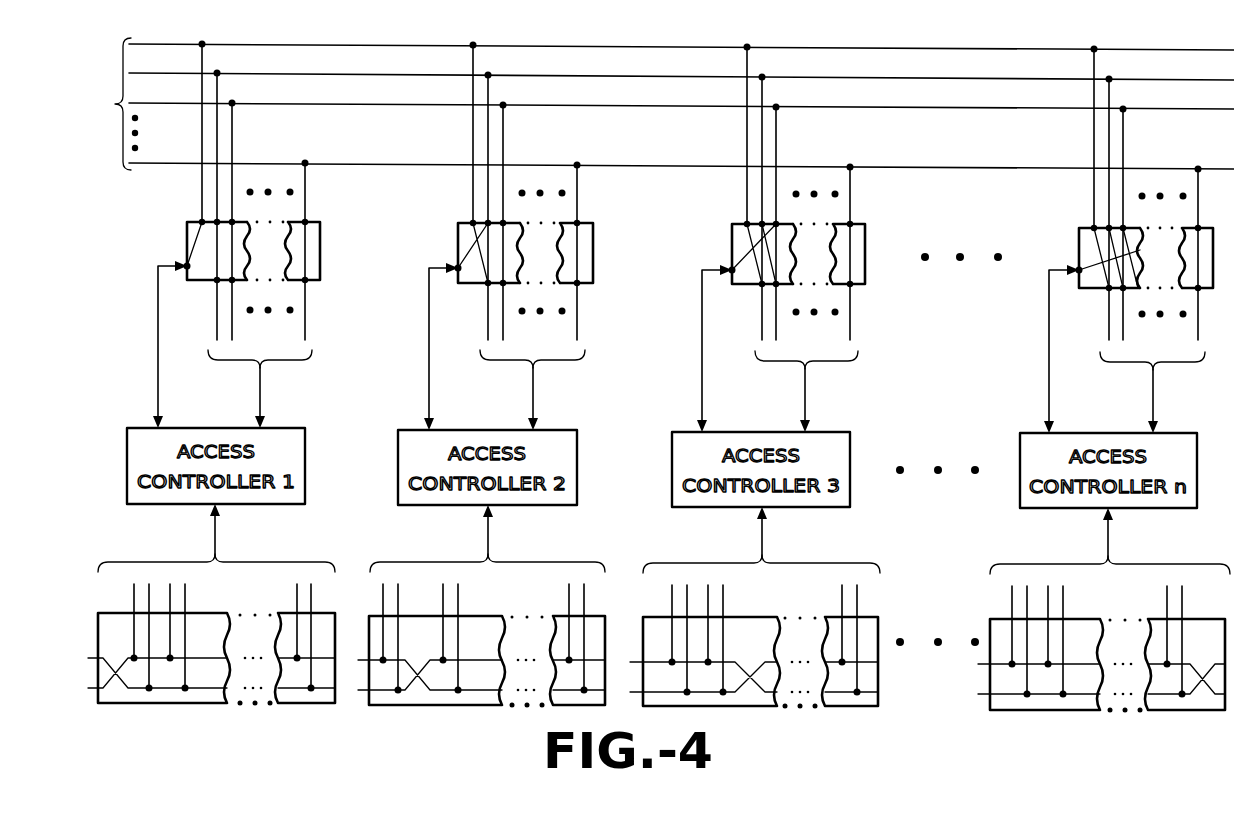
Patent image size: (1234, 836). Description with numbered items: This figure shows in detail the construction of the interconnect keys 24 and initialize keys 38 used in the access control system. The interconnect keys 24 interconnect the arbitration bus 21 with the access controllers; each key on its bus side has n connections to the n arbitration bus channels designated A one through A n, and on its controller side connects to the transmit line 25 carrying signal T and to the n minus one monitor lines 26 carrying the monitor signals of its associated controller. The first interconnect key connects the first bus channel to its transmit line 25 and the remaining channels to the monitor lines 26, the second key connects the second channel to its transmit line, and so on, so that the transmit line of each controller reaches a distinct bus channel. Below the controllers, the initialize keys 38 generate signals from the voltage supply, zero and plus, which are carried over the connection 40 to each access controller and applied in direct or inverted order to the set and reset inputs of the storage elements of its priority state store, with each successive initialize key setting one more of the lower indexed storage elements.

The arbitration bus 21 is at (663, 95).
The interconnect keys 24 is at (187, 236).
The transmit line 25 is at (158, 348).
The monitor lines 26 is at (263, 399).
The initialize keys 38 is at (328, 620).
The register output line 40 is at (217, 530).